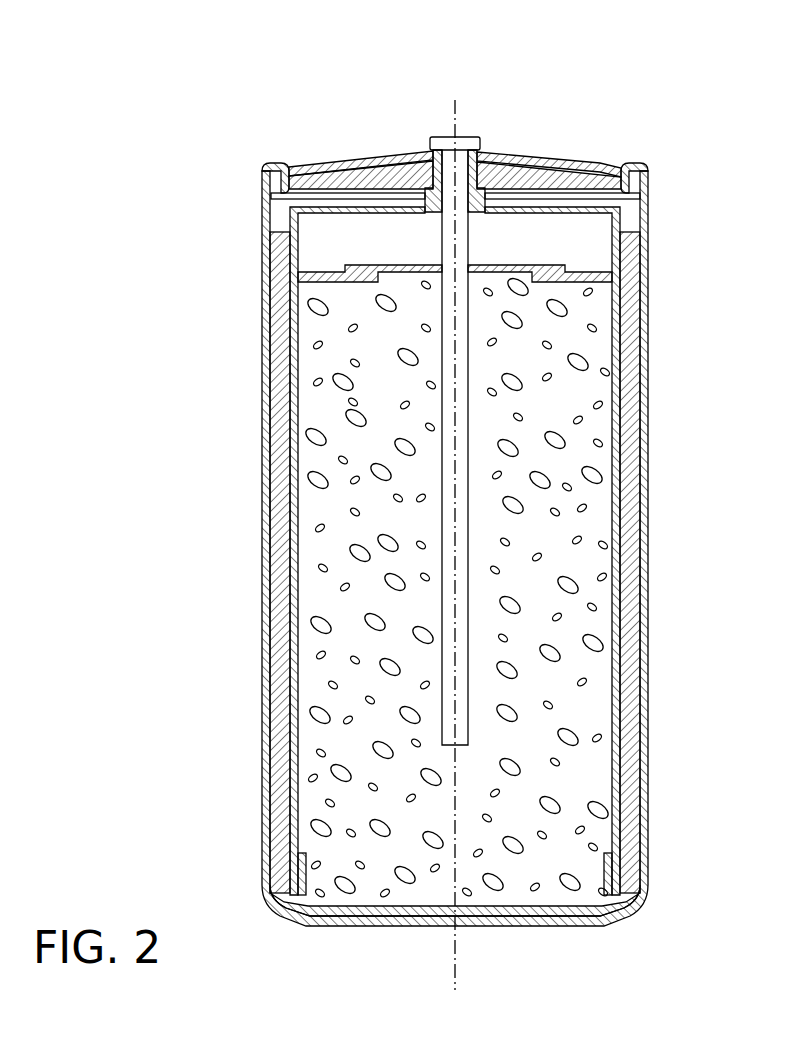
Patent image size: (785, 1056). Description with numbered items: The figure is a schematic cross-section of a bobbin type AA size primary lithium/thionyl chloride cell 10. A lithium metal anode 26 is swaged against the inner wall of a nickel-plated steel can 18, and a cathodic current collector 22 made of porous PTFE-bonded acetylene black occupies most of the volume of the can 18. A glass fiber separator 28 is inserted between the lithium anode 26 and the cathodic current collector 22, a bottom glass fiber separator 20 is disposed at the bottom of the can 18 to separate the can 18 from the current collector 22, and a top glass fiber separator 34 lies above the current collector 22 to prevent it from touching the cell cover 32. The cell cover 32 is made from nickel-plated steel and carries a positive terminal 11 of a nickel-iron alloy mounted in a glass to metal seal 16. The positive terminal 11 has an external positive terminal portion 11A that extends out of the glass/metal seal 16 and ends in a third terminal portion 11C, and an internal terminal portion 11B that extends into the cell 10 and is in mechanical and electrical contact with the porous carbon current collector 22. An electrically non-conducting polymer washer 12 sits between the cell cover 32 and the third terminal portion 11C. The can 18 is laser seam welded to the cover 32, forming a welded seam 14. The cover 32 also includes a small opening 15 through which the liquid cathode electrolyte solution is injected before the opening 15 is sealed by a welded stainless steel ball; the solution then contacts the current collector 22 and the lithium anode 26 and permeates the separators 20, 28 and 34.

The cell 10 is at (532, 93).
The positive terminal 11 is at (472, 513).
The external positive terminal portion 11A is at (452, 180).
The internal terminal portion 11B is at (444, 587).
The third terminal portion 11C is at (452, 136).
The electrically non-conducting polymer washer 12 is at (557, 153).
The welded seam 14 is at (640, 162).
The small opening 15 is at (348, 183).
The glass to metal seal 16 is at (472, 213).
The can 18 is at (648, 360).
The bottom glass fiber separator 20 is at (580, 902).
The cathodic current collector 22 is at (341, 733).
The lithium metal anode 26 is at (283, 520).
The glass fiber separator 28 is at (292, 423).
The cell cover 32 is at (513, 175).
The top glass fiber separator 34 is at (327, 272).